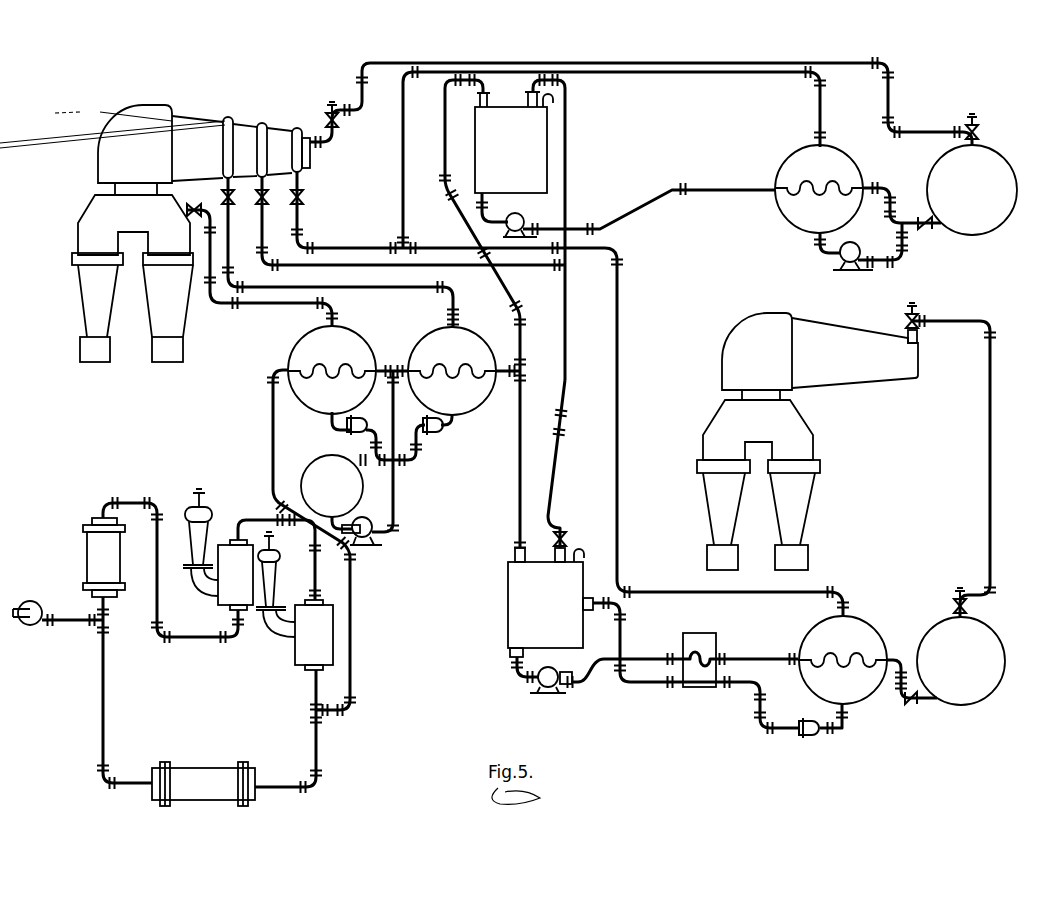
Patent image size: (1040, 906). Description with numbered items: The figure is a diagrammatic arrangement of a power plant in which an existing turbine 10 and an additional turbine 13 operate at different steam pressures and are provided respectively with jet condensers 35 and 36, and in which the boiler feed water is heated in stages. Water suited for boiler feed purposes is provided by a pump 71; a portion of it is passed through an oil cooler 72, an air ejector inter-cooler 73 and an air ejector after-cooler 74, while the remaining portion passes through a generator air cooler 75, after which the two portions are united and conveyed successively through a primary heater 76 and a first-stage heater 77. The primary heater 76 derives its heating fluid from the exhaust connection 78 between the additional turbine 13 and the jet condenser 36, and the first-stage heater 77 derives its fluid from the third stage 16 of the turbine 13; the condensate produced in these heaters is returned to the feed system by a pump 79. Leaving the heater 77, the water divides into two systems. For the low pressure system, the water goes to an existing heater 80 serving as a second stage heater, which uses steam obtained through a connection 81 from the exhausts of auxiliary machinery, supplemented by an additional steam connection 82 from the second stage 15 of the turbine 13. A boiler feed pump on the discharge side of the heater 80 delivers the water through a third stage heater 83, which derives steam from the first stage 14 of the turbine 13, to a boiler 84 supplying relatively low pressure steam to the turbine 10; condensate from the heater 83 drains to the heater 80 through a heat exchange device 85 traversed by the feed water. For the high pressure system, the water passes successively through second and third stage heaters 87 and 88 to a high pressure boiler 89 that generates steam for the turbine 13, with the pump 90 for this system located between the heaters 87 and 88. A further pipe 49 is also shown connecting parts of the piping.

The existing turbine 10 is at (858, 340).
The additional turbine 13 is at (202, 122).
The first stage of the turbine 14 is at (300, 186).
The second stage of the turbine 15 is at (265, 186).
The third stage of the turbine 16 is at (231, 186).
The jet condenser 35 is at (808, 448).
The jet condenser 36 is at (90, 289).
The pipe 49 is at (617, 400).
The pump 71 is at (33, 626).
The oil cooler 72 is at (95, 557).
The air ejector inter-cooler 73 is at (247, 597).
The air ejector after-cooler 74 is at (325, 615).
The generator air cooler 75 is at (202, 775).
The primary heater 76 is at (308, 348).
The first-stage heater 77 is at (423, 348).
The exhaust connection 78 is at (98, 208).
The pump 79 is at (362, 546).
The existing heater 80 is at (512, 575).
The connection 81 is at (563, 530).
The steam connection 82 is at (540, 699).
The third stage heater 83 is at (859, 690).
The boiler 84 is at (966, 692).
The heat exchange device 85 is at (700, 686).
The second stage heater 87 is at (488, 129).
The third stage heater 88 is at (797, 165).
The high pressure boiler 89 is at (952, 166).
The pump 90 is at (523, 218).